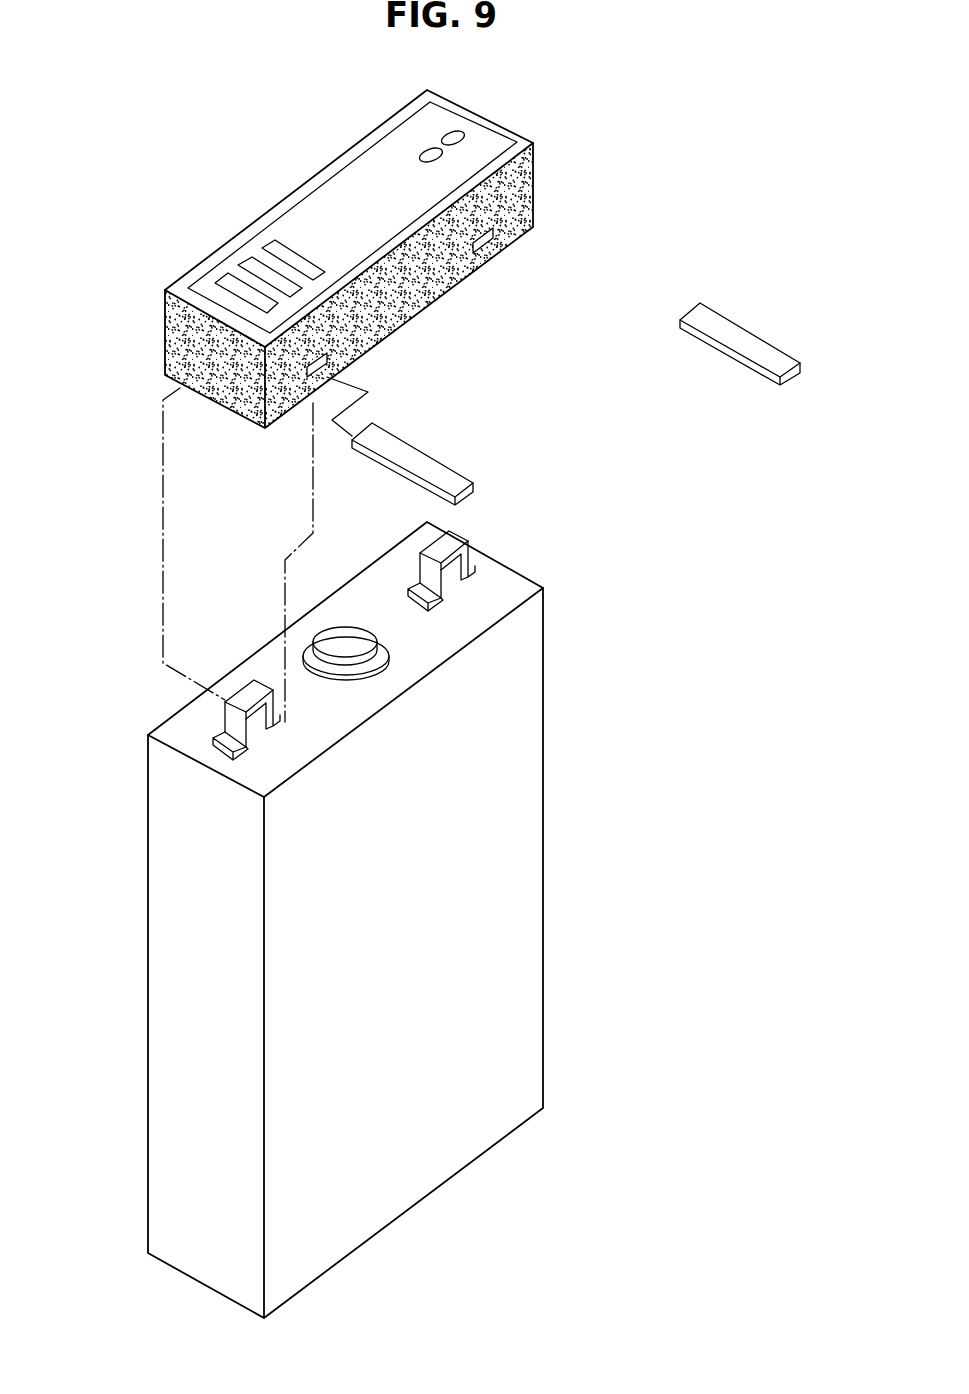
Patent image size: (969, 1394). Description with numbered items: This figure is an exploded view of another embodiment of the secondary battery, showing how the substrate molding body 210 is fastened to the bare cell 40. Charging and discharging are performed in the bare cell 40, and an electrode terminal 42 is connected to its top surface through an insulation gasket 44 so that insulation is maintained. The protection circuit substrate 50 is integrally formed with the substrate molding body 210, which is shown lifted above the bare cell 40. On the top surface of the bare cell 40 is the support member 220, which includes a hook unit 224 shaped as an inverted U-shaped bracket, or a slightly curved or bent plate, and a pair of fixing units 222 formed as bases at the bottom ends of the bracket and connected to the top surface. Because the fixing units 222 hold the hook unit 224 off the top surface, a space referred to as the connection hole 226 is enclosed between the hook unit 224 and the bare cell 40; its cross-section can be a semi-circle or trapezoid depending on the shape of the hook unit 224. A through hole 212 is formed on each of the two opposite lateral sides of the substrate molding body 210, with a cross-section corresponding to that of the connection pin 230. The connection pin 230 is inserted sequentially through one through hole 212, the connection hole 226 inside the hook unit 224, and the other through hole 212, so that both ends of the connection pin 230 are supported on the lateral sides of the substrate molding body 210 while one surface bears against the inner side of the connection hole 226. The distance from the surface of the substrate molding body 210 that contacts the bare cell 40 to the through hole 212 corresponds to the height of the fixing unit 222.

The bare cell 40 is at (525, 848).
The electrode terminal 42 is at (357, 653).
The insulation gasket 44 is at (387, 642).
The protection circuit substrate 50 is at (325, 208).
The substrate molding body 210 is at (522, 170).
The through hole 212 is at (532, 225).
The support member 220 is at (475, 528).
The fixing unit 222 is at (217, 748).
The hook unit 224 is at (230, 710).
The connection hole 226 is at (268, 720).
The connection pin 230 is at (740, 337).